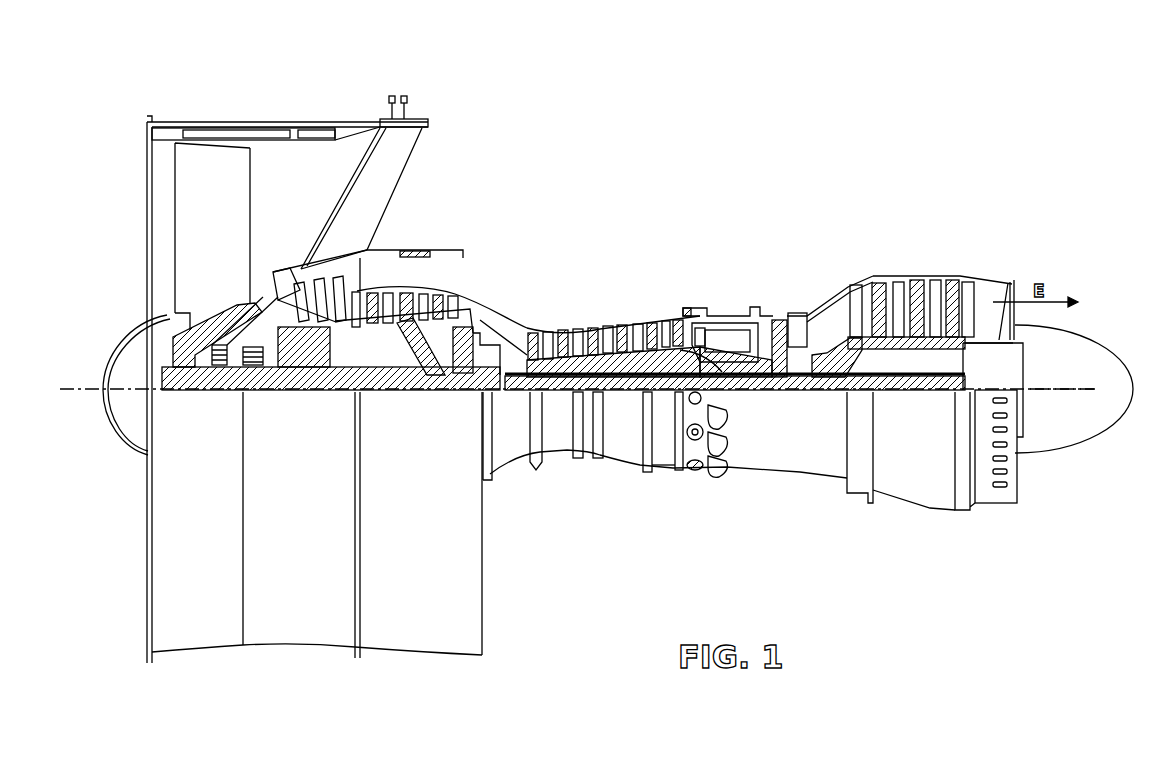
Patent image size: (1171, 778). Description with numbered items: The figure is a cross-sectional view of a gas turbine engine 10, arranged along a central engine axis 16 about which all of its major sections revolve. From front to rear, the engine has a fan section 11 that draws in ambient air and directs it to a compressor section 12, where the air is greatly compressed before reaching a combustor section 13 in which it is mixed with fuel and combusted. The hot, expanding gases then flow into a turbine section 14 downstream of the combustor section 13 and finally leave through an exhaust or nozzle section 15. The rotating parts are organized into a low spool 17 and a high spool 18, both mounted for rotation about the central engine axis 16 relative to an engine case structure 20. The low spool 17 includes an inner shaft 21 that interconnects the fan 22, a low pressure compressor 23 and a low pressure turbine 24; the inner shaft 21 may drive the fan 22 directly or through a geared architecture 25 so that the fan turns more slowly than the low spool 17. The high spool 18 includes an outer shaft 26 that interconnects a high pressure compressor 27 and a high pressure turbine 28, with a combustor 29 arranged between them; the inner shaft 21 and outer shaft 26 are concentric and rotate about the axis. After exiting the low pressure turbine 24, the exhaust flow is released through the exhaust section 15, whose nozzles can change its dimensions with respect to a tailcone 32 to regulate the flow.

The gas turbine engine 10 is at (762, 152).
The fan section 11 is at (355, 106).
The compressor section 12 is at (511, 277).
The combustor section 13 is at (778, 278).
The turbine section 14 is at (896, 264).
The exhaust section 15 is at (1009, 290).
The central engine axis 16 is at (1053, 392).
The low spool 17 is at (632, 393).
The high spool 18 is at (666, 356).
The engine case structure 20 is at (670, 470).
The inner shaft 21 is at (512, 393).
The fan 22 is at (223, 232).
The low pressure compressor 23 is at (426, 292).
The low pressure turbine 24 is at (912, 291).
The geared architecture 25 is at (320, 368).
The outer shaft 26 is at (723, 372).
The high pressure compressor 27 is at (613, 360).
The high pressure turbine 28 is at (788, 310).
The combustor 29 is at (722, 338).
The tailcone 32 is at (1094, 339).